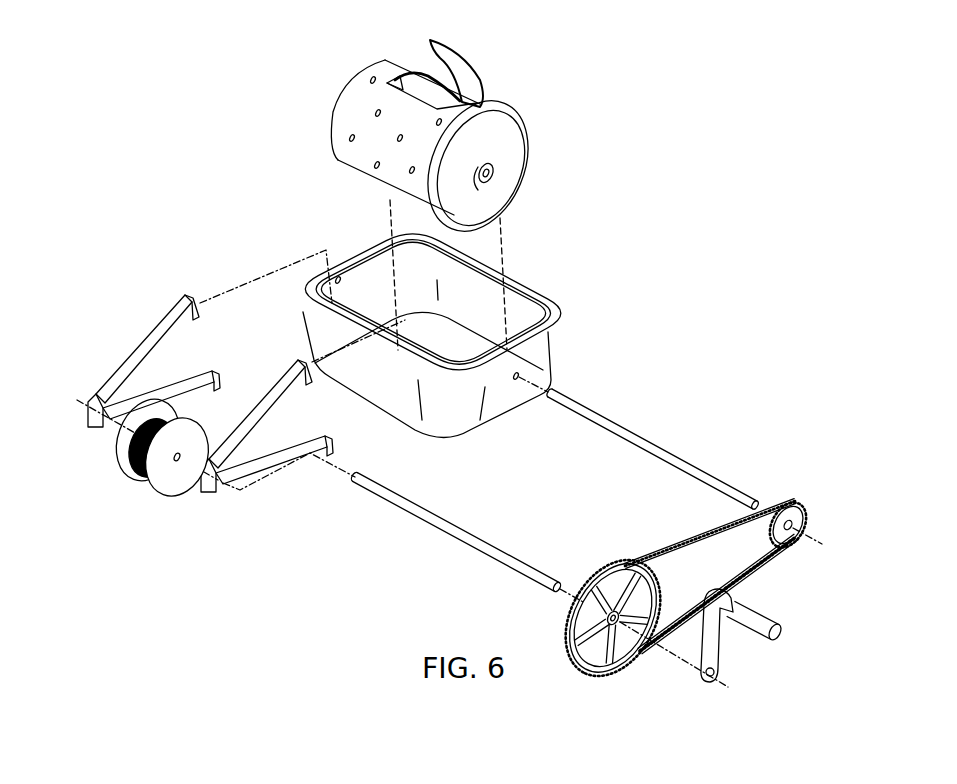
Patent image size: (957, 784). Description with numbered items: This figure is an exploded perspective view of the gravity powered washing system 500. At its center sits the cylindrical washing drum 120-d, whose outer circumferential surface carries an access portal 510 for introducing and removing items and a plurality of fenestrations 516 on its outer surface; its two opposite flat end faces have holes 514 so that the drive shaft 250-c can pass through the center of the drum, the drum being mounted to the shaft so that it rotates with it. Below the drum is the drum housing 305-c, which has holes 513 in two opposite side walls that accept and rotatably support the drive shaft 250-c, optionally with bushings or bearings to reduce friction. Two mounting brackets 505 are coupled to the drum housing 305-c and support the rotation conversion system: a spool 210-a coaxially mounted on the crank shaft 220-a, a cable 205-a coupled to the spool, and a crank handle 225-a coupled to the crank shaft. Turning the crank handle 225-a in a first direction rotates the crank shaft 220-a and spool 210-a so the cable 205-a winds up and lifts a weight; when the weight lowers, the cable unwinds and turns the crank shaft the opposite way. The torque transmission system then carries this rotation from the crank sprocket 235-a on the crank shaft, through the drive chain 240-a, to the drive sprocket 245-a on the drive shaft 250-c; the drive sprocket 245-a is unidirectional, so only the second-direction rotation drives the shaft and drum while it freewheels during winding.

The gravity powered washing system 500 is at (730, 238).
The washing drum 120-d is at (532, 120).
The access portal 510 is at (397, 83).
The holes 514 is at (496, 172).
The fenestrations 516 is at (352, 137).
The holes 513 is at (338, 278).
The drum housing 305-c is at (582, 302).
The mounting brackets 505 is at (150, 320).
The cable 205-a is at (137, 478).
The spool 210-a is at (178, 490).
The crank shaft 220-a is at (462, 530).
The drive shaft 250-c is at (628, 424).
The drive chain 240-a is at (650, 552).
The crank sprocket 235-a is at (587, 667).
The drive sprocket 245-a is at (790, 538).
The crank handle 225-a is at (763, 640).